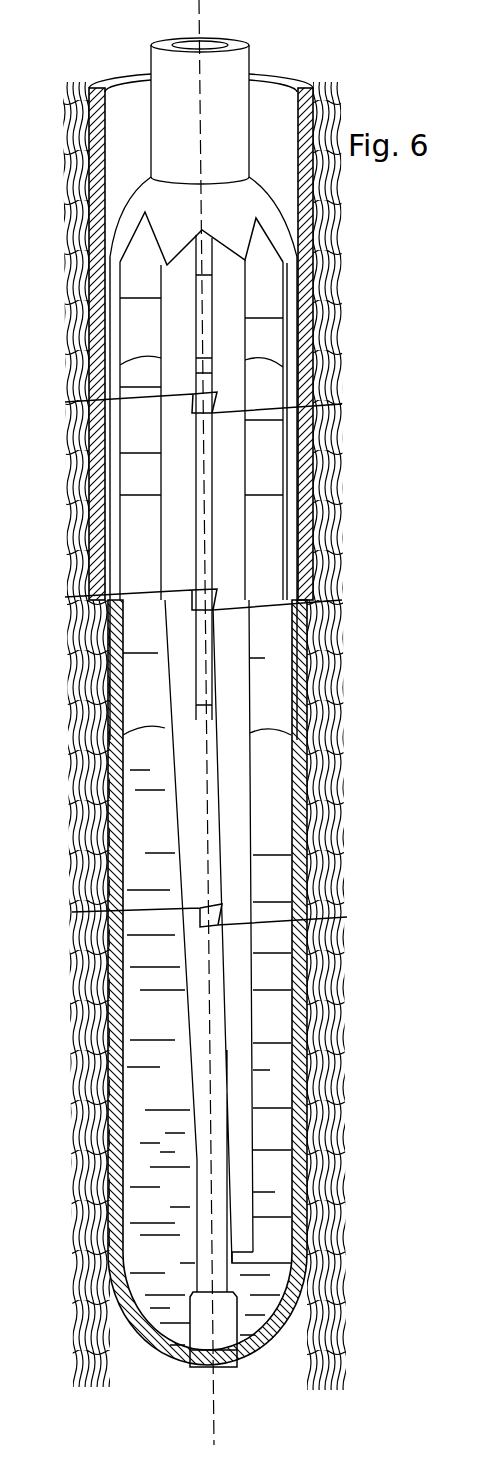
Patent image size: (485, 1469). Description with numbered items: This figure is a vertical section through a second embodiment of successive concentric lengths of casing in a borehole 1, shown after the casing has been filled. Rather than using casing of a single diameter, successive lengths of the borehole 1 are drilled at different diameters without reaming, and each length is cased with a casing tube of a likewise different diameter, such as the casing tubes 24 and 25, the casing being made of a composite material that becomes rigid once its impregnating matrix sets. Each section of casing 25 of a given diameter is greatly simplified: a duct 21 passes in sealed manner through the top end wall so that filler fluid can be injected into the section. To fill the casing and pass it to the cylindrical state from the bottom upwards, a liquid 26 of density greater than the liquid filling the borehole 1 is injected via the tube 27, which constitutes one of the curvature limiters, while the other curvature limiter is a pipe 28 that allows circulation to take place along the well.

The borehole 1 is at (312, 1356).
The duct 21 is at (223, 140).
The casing tube 24 is at (308, 308).
The casing tube 25 is at (293, 593).
The liquid 26 is at (273, 1090).
The tube 27 is at (240, 1170).
The pipe 28 is at (213, 1245).